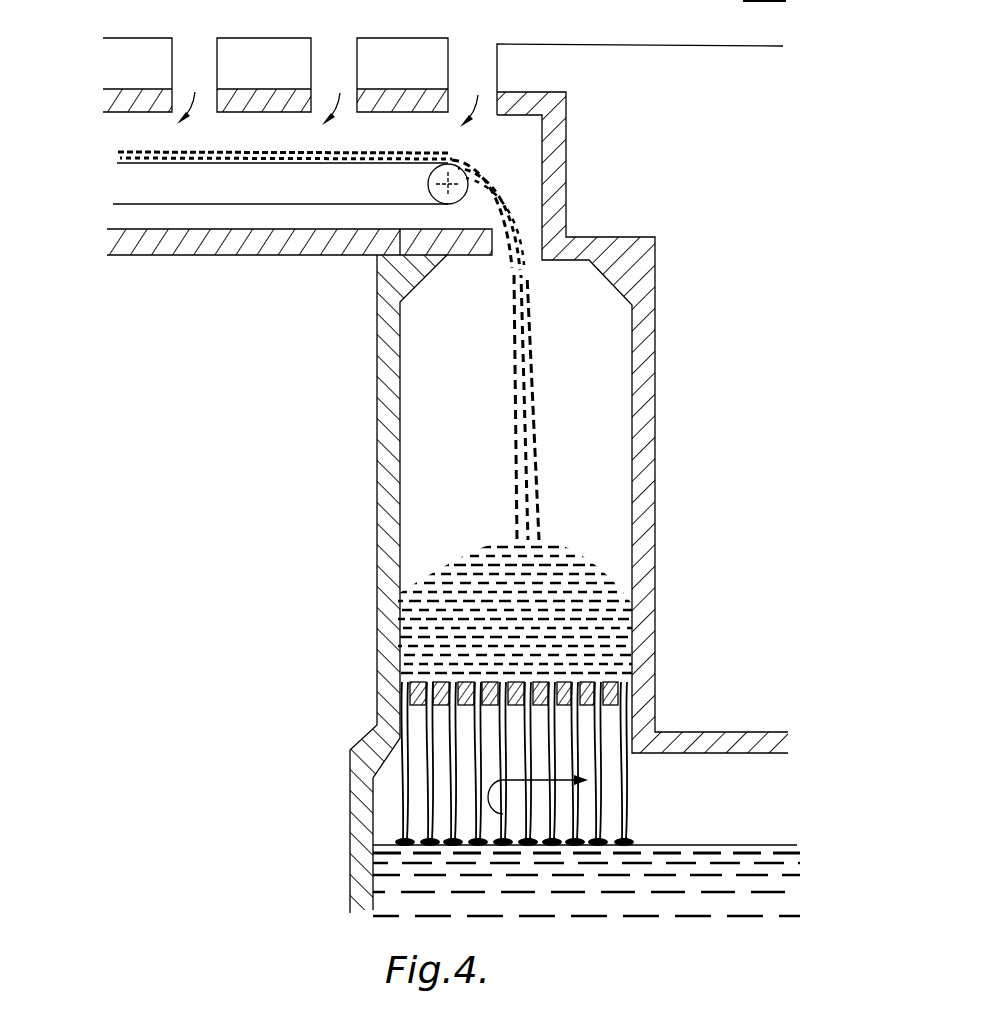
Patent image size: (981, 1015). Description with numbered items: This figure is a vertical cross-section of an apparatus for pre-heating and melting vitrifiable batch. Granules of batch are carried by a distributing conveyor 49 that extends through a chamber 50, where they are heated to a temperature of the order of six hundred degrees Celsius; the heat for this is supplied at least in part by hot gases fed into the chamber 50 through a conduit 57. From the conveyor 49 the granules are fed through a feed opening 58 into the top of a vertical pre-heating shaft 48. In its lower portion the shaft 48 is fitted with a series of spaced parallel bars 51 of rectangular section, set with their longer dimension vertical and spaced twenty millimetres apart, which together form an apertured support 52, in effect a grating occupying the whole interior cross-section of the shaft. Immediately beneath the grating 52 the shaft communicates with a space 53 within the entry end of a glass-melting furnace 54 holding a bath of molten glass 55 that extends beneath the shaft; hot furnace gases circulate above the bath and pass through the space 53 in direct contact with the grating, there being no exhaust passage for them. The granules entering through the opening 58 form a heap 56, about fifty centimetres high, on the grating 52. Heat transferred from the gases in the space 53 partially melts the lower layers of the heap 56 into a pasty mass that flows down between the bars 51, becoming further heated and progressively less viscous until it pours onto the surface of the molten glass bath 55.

The vertical pre-heating shaft 48 is at (377, 418).
The distributing conveyor 49 is at (212, 163).
The chamber 50 is at (132, 172).
The spaced parallel bars 51 is at (628, 615).
The apertured support 52 is at (405, 690).
The space 53 is at (538, 794).
The glass-melting furnace 54 is at (503, 814).
The bath of molten glass 55 is at (630, 906).
The heap 56 is at (513, 587).
The conduit 57 is at (705, 22).
The feed opening 58 is at (531, 270).